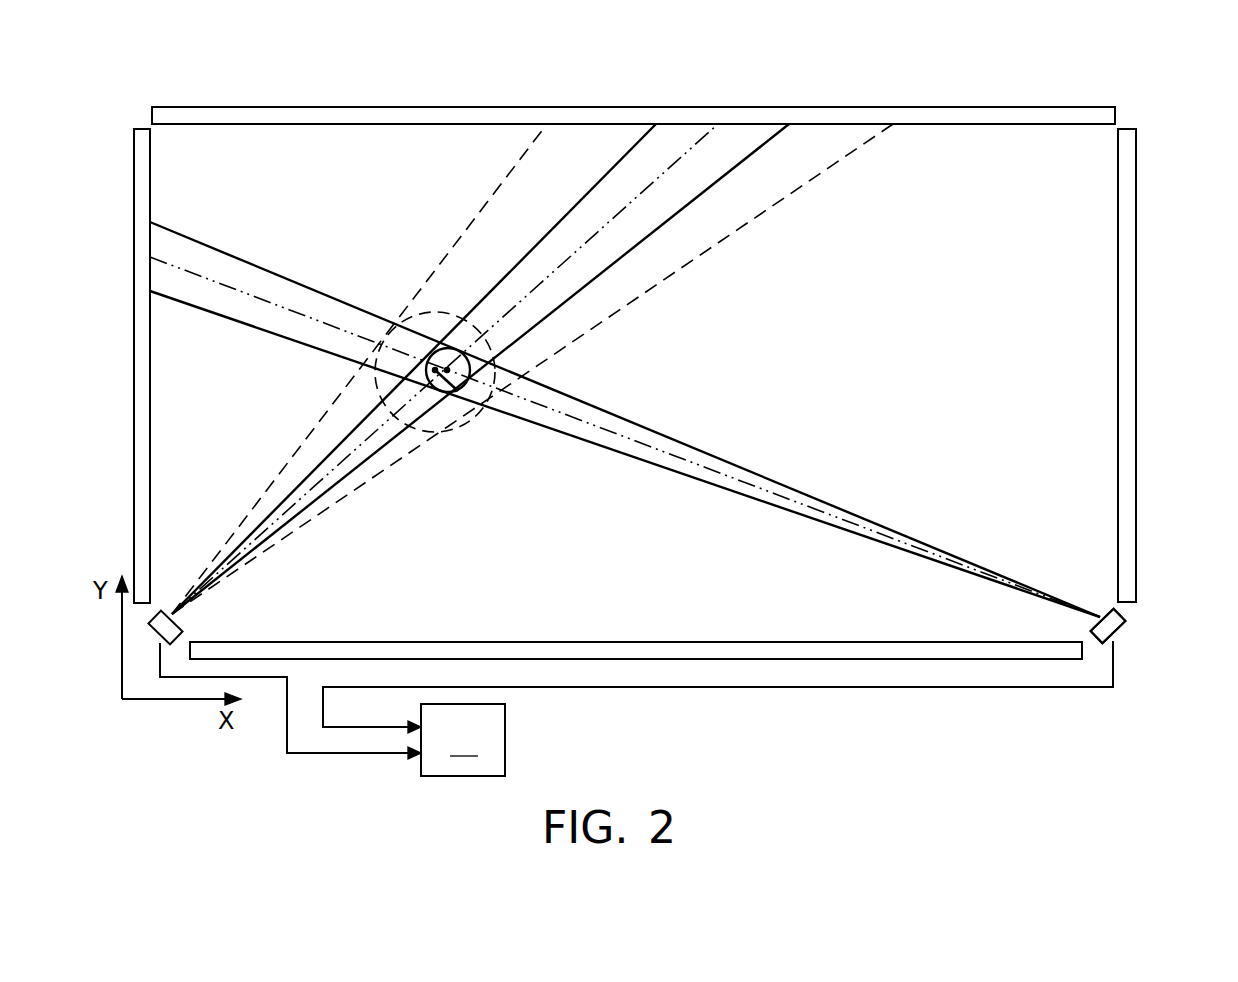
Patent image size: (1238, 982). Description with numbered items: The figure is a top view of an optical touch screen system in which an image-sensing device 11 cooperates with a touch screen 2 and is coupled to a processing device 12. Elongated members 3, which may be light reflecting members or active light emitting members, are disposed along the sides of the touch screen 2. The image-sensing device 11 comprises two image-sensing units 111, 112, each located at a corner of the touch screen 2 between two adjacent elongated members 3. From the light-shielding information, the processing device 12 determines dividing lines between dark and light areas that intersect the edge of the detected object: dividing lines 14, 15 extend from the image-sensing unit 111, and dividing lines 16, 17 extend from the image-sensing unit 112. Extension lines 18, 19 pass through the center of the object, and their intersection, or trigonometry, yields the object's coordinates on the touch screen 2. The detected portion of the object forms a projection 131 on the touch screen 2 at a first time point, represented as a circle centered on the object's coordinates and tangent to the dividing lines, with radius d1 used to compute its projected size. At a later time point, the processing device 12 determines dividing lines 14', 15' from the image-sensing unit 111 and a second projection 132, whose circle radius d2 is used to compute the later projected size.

The touch screen 2 is at (1075, 363).
The elongated member 3 is at (957, 107).
The image-sensing device 11 is at (1152, 618).
The image-sensing unit 111 is at (160, 612).
The image-sensing unit 112 is at (1122, 630).
The processing device 12 is at (636, 708).
The dividing line 14 is at (414, 369).
The dividing line 14' is at (359, 369).
The dividing line 15 is at (480, 369).
The dividing line 15' is at (532, 369).
The dividing line 16 is at (685, 478).
The dividing line 17 is at (723, 462).
The extension line 18 is at (365, 448).
The extension line 19 is at (610, 435).
The projection 131 is at (468, 358).
The projection 132 is at (432, 432).
The radius of the circle d1 is at (448, 370).
The radius of the circle d2 is at (453, 398).